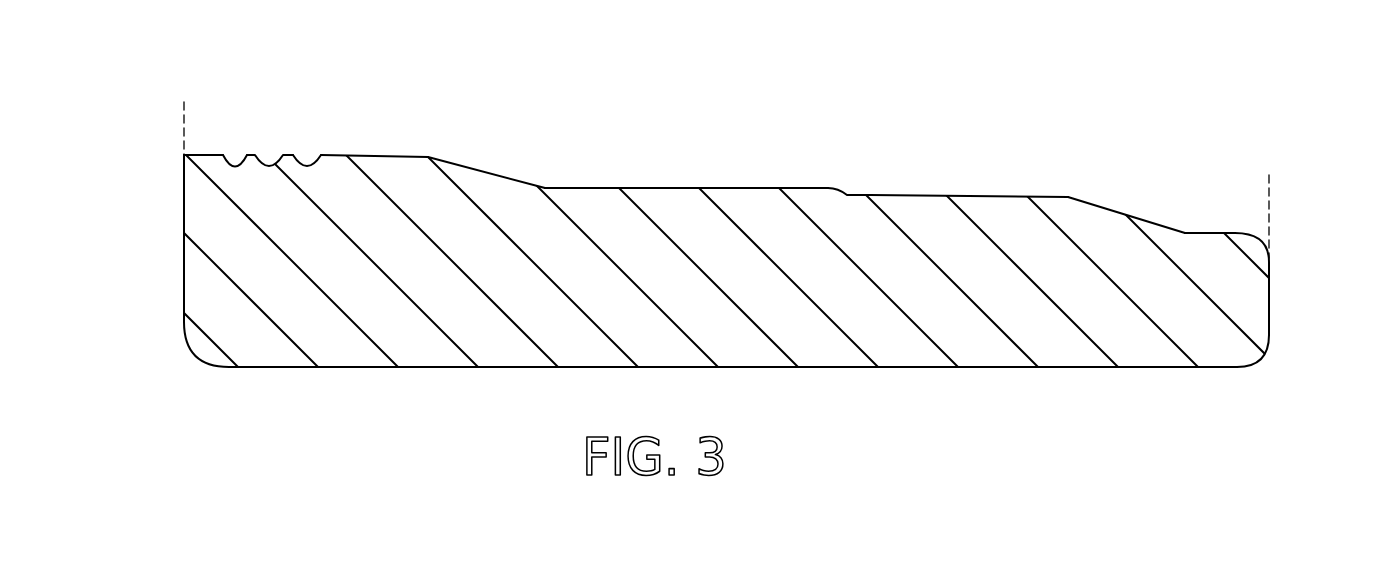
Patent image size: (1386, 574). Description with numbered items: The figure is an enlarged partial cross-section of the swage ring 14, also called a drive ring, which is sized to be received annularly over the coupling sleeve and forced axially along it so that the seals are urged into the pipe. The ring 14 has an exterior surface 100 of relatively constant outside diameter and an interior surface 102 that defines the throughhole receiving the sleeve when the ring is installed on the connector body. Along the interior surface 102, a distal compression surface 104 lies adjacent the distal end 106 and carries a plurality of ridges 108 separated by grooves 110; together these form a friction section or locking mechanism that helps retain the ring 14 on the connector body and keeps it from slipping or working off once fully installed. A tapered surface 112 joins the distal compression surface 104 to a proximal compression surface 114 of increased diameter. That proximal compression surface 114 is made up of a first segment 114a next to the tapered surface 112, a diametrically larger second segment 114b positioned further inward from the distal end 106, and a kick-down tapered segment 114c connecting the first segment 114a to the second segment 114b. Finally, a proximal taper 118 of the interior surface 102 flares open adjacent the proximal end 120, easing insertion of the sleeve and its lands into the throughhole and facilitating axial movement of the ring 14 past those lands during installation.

The swage ring 14 is at (508, 378).
The exterior surface 100 is at (813, 367).
The interior surface 102 is at (684, 188).
The distal compression surface 104 is at (386, 155).
The distal end 106 is at (184, 258).
The ridges 108 is at (288, 156).
The grooves 110 is at (237, 165).
The tapered surface 112 is at (490, 173).
The proximal compression surface 114 is at (760, 188).
The first segment 114a is at (609, 188).
The second segment 114b is at (928, 196).
The kick-down tapered segment 114c is at (838, 188).
The proximal taper 118 is at (1107, 209).
The proximal end 120 is at (1269, 290).